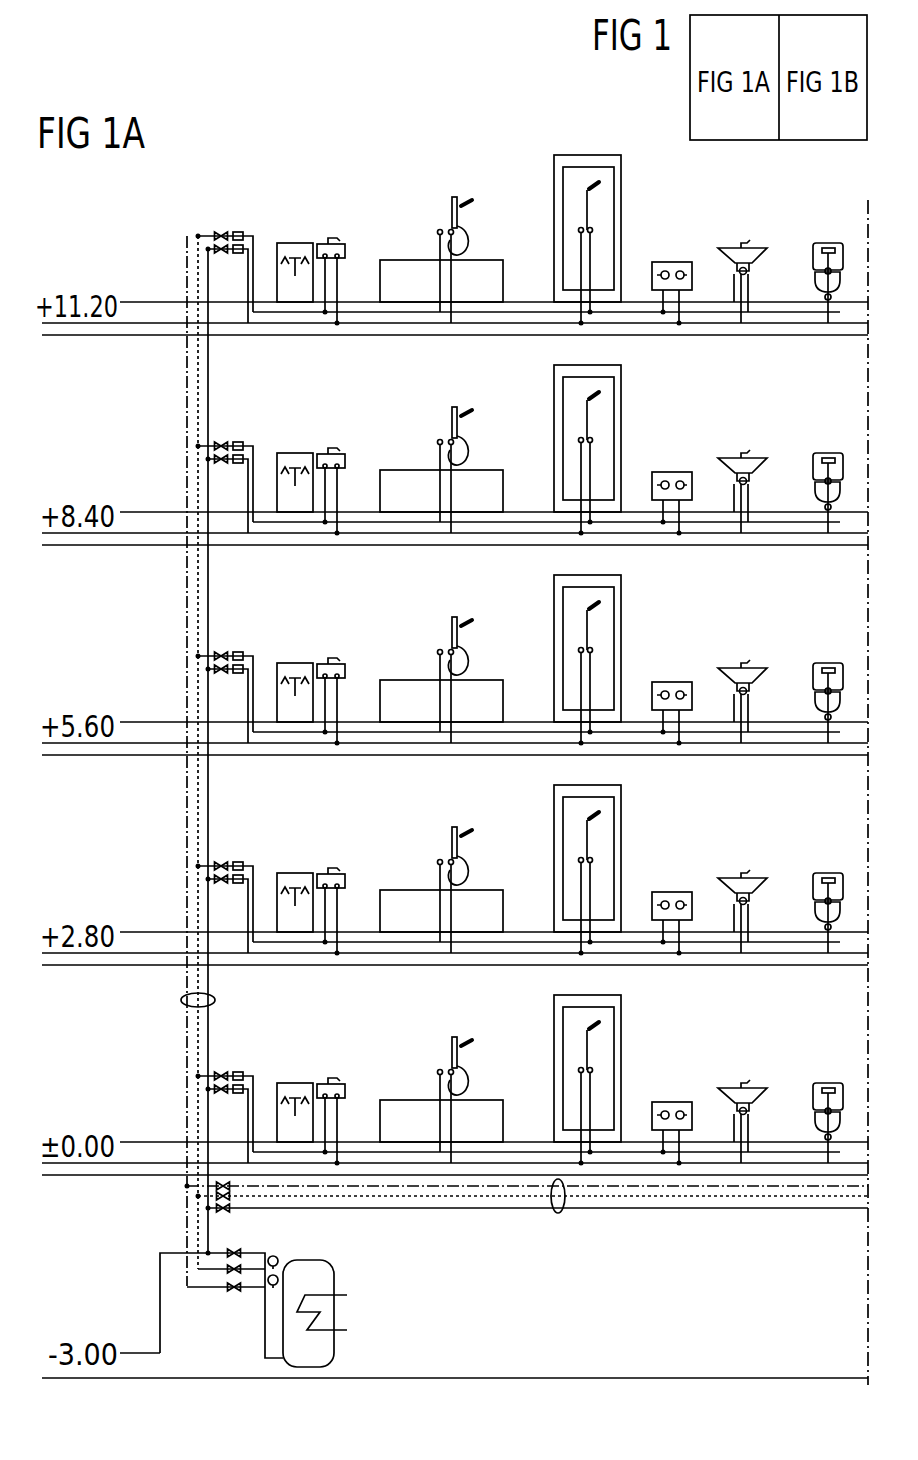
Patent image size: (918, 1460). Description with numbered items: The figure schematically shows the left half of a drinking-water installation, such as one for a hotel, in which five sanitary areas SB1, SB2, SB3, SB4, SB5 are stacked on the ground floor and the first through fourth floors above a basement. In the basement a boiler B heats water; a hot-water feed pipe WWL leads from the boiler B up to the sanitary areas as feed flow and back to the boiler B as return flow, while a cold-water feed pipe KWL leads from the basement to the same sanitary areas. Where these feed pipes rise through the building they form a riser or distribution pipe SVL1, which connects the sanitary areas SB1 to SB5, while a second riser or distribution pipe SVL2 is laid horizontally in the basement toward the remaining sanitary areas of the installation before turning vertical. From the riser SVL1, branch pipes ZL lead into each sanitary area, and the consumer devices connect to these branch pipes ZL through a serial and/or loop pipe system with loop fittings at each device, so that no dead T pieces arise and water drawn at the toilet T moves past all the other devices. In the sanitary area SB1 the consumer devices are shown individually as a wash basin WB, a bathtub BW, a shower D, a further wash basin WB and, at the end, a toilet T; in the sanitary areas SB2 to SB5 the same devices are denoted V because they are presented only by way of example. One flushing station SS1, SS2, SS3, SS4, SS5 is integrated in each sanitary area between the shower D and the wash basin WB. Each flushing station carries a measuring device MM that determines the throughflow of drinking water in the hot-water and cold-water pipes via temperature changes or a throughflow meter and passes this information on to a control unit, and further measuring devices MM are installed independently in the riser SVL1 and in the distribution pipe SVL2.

The sanitary area SB1 is at (455, 1077).
The sanitary area SB2 is at (455, 867).
The sanitary area SB3 is at (455, 657).
The sanitary area SB4 is at (455, 447).
The sanitary area SB5 is at (455, 237).
The branch pipe ZL is at (283, 679).
The consumer device V is at (569, 678).
The bathtub BW is at (410, 1100).
The shower D is at (553, 1074).
The measuring device MM is at (548, 1242).
The flushing station SS1 is at (687, 1110).
The flushing station SS2 is at (687, 900).
The flushing station SS3 is at (687, 690).
The flushing station SS4 is at (687, 480).
The flushing station SS5 is at (687, 270).
The wash basin WB is at (343, 1080).
The toilet T is at (830, 1082).
The riser or distribution pipe SVL1 is at (200, 808).
The riser or distribution pipe SVL2 is at (722, 1186).
The hot-water feed pipe WWL is at (187, 1214).
The cold-water feed pipe KWL is at (210, 1222).
The boiler B is at (336, 1310).